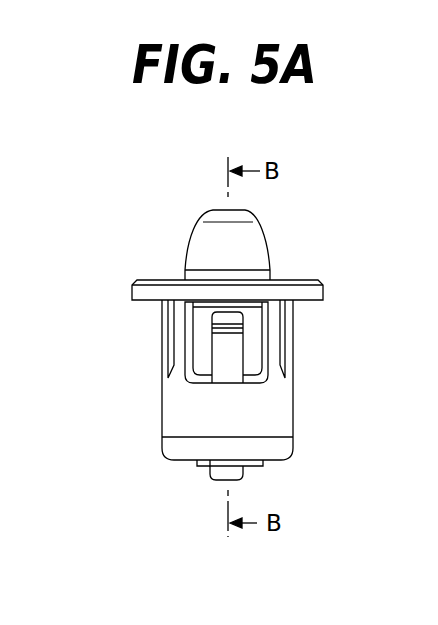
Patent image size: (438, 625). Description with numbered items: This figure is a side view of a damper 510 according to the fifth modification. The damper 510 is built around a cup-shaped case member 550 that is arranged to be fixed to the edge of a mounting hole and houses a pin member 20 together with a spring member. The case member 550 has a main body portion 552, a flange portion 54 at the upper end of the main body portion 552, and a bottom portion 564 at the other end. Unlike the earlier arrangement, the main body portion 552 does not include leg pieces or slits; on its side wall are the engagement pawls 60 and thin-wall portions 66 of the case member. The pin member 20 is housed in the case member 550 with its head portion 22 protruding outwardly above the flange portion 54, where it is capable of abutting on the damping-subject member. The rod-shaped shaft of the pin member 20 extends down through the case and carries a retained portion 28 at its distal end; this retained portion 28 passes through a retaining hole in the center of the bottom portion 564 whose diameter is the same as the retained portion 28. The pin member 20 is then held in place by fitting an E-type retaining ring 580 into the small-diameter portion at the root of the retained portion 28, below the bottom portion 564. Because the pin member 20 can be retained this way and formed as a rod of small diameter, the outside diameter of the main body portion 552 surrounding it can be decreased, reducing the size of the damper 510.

The damper 510 is at (263, 576).
The pin member 20 is at (238, 258).
The head portion 22 is at (208, 243).
The flange portion 54 is at (147, 292).
The case member 550 is at (188, 400).
The main body portion 552 is at (268, 403).
The thin-wall portions 66 is at (202, 332).
The engagement pawls 60 is at (232, 348).
The bottom portion 564 is at (268, 468).
The E-type retaining ring 580 is at (207, 470).
The retained portion 28 is at (242, 477).